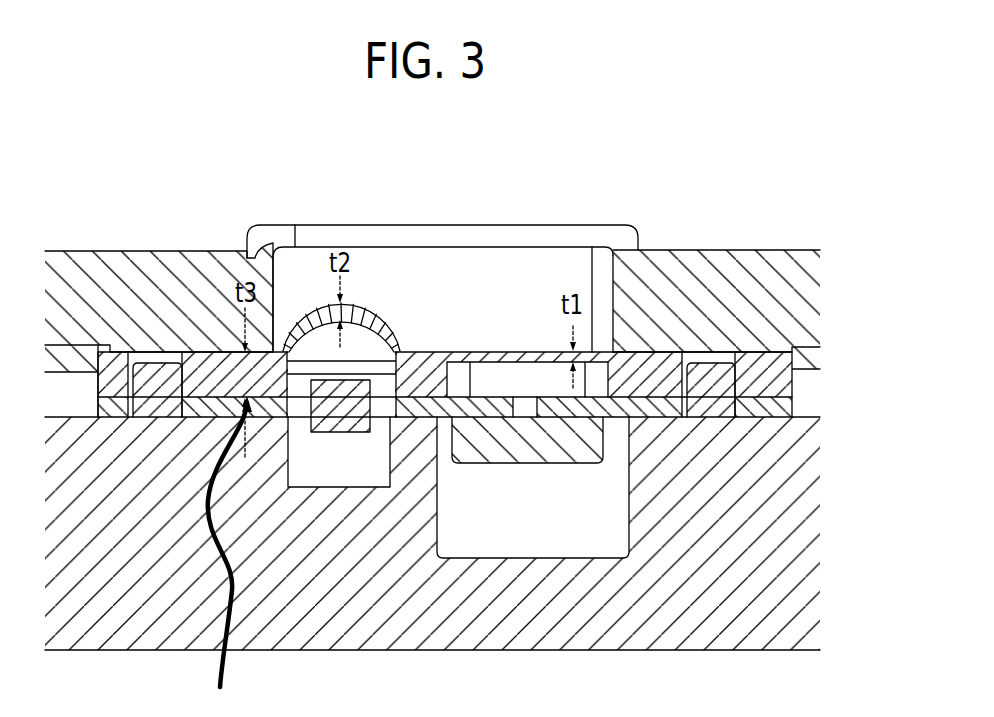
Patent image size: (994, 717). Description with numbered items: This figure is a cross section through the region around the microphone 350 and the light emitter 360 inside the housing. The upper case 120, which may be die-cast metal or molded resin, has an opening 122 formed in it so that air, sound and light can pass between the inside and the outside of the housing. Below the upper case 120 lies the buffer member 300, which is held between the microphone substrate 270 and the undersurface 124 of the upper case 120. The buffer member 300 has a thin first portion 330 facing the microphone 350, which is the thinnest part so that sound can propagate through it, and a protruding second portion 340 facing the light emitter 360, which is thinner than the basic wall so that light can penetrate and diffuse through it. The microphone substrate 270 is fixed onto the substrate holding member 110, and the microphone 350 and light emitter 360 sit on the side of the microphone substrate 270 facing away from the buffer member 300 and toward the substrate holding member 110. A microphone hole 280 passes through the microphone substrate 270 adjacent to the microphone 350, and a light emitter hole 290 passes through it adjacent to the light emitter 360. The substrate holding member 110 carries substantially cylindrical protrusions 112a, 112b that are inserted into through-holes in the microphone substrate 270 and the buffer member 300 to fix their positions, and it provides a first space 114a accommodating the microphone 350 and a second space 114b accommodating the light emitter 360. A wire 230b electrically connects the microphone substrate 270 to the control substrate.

The substrate holding member 110 is at (101, 627).
The protrusion 112a is at (136, 380).
The protrusion 112b is at (703, 375).
The first space 114a is at (473, 538).
The second space 114b is at (368, 475).
The upper case 120 is at (677, 273).
The opening 122 is at (390, 267).
The undersurface 124 is at (618, 250).
The wire 230b is at (200, 525).
The microphone substrate 270 is at (617, 410).
The microphone hole 280 is at (492, 392).
The light emitter hole 290 is at (301, 405).
The buffer member 300 is at (218, 373).
The first portion 330 is at (525, 410).
The second portion 340 is at (308, 313).
The microphone 350 is at (543, 455).
The light emitter 360 is at (335, 407).